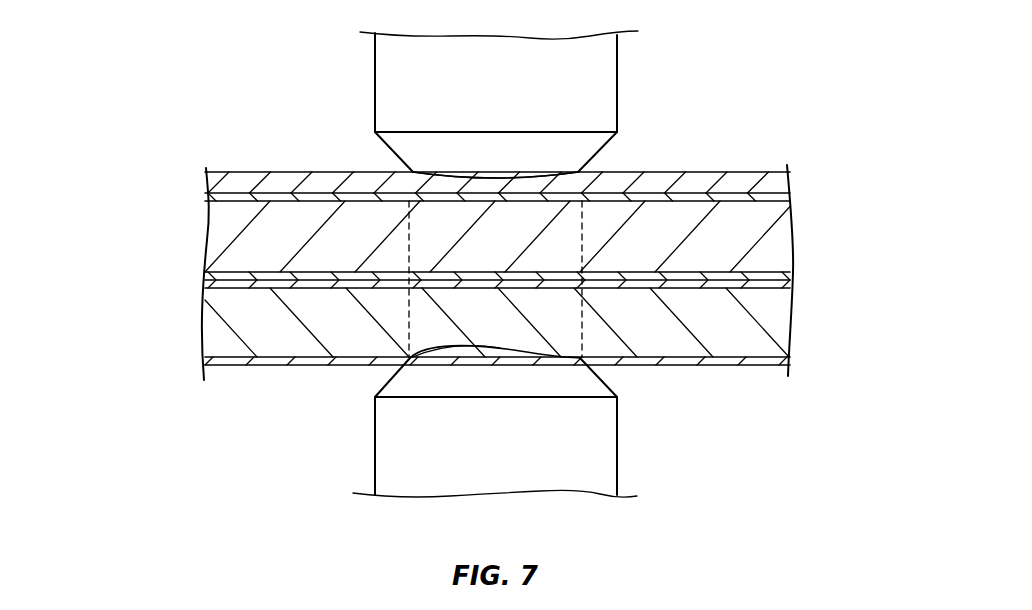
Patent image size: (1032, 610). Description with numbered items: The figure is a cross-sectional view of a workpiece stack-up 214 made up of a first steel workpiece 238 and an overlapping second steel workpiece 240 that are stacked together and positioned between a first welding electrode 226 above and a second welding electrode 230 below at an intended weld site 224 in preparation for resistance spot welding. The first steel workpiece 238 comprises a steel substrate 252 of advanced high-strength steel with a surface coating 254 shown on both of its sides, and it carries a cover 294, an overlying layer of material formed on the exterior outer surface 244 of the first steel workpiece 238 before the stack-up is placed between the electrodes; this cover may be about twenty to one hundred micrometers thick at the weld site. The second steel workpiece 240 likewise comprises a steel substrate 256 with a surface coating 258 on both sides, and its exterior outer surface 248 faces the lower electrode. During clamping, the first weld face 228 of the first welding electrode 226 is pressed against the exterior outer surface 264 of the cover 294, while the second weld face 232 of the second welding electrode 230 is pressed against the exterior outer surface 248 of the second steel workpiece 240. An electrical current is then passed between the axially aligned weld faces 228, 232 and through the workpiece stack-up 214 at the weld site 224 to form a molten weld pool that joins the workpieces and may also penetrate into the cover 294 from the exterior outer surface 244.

The workpiece stack-up 214 is at (130, 266).
The weld site 224 is at (408, 228).
The first welding electrode 226 is at (375, 85).
The first weld face 228 is at (510, 178).
The second welding electrode 230 is at (375, 460).
The second weld face 232 is at (480, 344).
The first steel workpiece 238 is at (207, 237).
The second steel workpiece 240 is at (200, 317).
The exterior outer surface 244 is at (723, 195).
The exterior outer surface 248 is at (712, 367).
The steel substrate 252 is at (793, 257).
The surface coating 254 is at (797, 200).
The steel substrate 256 is at (787, 333).
The surface coating 258 is at (793, 362).
The exterior outer surface 264 is at (765, 170).
The cover 294 is at (797, 178).